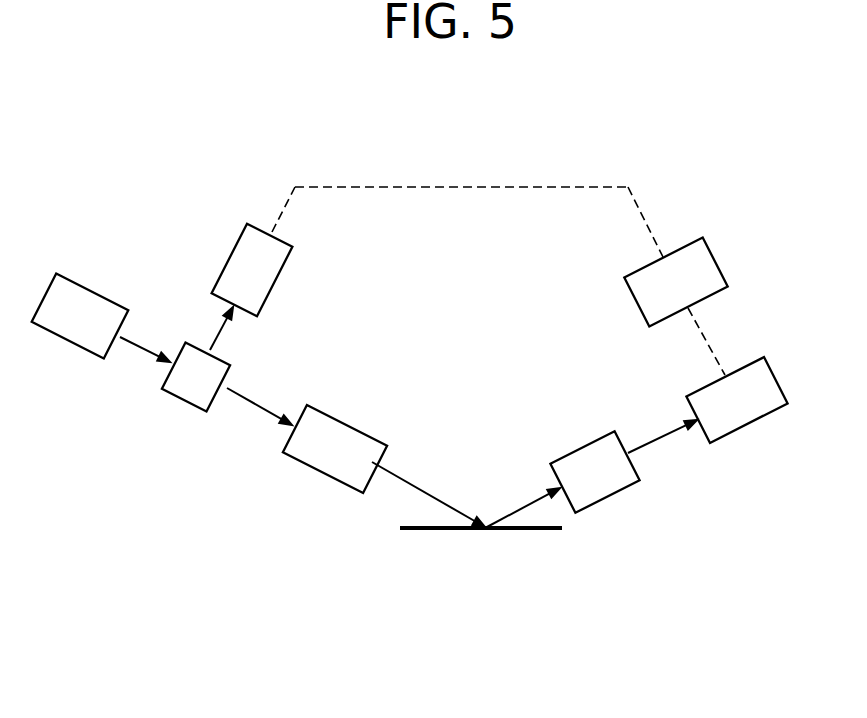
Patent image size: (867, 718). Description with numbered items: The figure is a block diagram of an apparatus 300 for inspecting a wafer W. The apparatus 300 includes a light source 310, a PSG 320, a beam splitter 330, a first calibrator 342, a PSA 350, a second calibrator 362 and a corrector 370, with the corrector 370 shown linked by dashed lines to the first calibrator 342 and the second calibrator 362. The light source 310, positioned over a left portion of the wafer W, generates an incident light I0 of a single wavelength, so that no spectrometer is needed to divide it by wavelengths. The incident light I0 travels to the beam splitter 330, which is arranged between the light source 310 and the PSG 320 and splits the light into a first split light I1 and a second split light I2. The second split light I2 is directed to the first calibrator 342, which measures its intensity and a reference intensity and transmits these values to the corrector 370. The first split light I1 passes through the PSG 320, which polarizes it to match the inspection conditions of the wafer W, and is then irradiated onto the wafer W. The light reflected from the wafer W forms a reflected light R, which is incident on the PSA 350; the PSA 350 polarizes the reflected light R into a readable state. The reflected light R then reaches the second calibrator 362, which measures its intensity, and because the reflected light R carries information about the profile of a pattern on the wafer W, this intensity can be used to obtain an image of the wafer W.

The apparatus for inspecting a wafer 300 is at (508, 150).
The light source 310 is at (68, 340).
The PSG 320 is at (313, 472).
The beam splitter 330 is at (182, 403).
The first calibrator 342 is at (228, 255).
The PSA 350 is at (623, 487).
The second calibrator 362 is at (727, 437).
The corrector 370 is at (637, 297).
The wafer W is at (515, 532).
The incident light I0 is at (130, 347).
The first split light I1 is at (255, 410).
The second split light I2 is at (217, 335).
The reflected light R is at (520, 505).